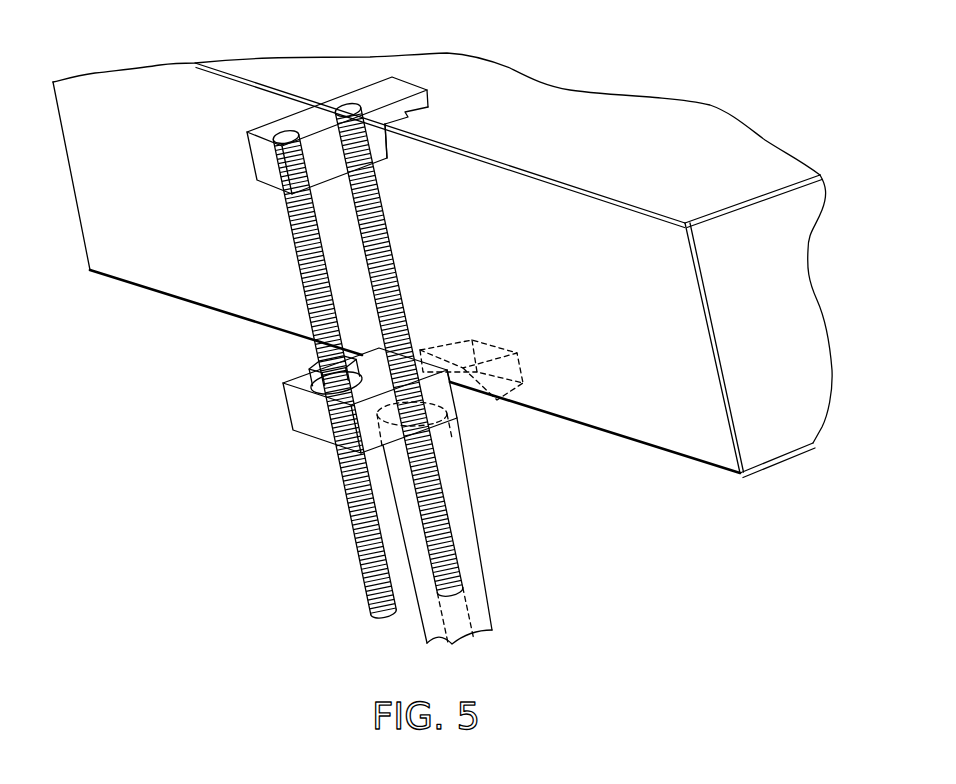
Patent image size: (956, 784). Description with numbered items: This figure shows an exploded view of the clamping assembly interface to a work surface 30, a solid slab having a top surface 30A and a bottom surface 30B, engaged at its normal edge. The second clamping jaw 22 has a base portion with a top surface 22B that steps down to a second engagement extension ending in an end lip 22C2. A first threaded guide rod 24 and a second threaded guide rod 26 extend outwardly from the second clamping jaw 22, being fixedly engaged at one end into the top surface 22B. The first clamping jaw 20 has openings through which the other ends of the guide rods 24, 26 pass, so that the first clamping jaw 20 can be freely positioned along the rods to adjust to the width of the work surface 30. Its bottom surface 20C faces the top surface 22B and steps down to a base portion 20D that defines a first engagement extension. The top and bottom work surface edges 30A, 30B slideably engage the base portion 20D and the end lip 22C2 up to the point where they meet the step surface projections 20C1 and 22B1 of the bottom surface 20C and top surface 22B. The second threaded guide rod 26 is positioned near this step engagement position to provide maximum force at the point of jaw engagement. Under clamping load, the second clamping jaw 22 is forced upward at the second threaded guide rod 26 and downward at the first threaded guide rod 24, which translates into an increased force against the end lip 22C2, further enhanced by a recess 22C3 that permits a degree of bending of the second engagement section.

The first clamping jaw 20 is at (272, 410).
The bottom surface 20C is at (395, 372).
The step surface projection 20C1 is at (455, 379).
The base portion 20D is at (490, 348).
The second clamping jaw 22 is at (245, 170).
The top surface 22B is at (329, 190).
The step surface projection 22B1 is at (388, 143).
The end lip 22C2 is at (440, 108).
The recess 22C3 is at (422, 123).
The first threaded guide rod 24 is at (312, 278).
The second threaded guide rod 26 is at (400, 290).
The work surface 30 is at (170, 318).
The top surface 30A is at (603, 455).
The bottom surface 30B is at (659, 152).